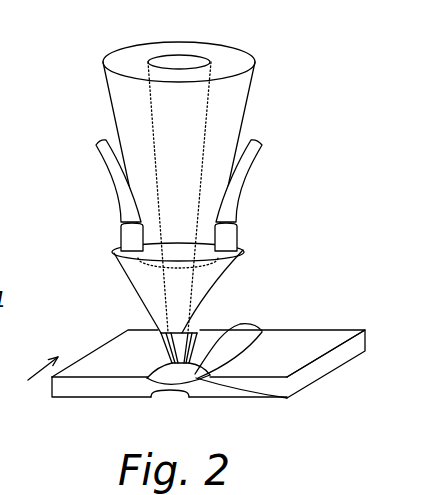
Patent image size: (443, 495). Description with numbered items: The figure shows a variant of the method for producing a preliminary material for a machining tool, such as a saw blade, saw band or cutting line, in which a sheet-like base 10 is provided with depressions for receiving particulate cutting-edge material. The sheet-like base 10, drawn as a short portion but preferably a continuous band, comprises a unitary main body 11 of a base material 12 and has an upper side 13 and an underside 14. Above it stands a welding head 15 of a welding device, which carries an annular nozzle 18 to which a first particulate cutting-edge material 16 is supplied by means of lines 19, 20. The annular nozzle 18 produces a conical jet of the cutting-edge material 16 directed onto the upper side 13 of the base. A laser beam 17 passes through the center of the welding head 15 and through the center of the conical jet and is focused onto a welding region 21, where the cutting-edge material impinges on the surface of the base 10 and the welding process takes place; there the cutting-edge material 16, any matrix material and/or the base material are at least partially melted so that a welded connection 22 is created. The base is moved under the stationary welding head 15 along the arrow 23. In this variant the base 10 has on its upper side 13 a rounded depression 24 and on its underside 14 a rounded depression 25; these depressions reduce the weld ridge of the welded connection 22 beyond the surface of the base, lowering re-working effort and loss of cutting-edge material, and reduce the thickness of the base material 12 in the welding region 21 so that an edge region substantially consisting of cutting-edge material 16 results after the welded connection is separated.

The sheet-like base 10 is at (225, 358).
The unitary main body 11 is at (337, 338).
The base material 12 is at (313, 372).
The upper side 13 is at (118, 358).
The underside 14 is at (100, 402).
The welding head 15 is at (279, 117).
The particulate cutting-edge material 16 is at (184, 368).
The laser beam 17 is at (190, 58).
The annular nozzle 18 is at (133, 271).
The line 19 is at (127, 191).
The line 20 is at (238, 189).
The welding region 21 is at (283, 397).
The welded connection 22 is at (243, 332).
The arrow 23 is at (37, 371).
The rounded depression 24 is at (162, 378).
The rounded depression 25 is at (165, 400).